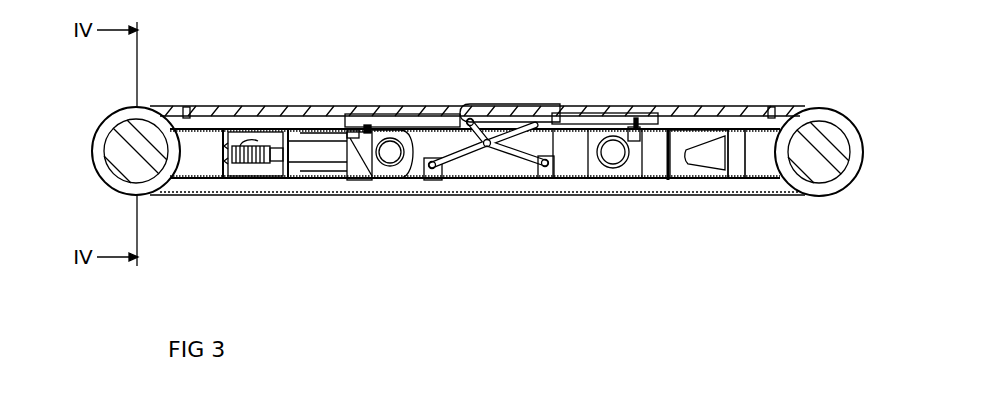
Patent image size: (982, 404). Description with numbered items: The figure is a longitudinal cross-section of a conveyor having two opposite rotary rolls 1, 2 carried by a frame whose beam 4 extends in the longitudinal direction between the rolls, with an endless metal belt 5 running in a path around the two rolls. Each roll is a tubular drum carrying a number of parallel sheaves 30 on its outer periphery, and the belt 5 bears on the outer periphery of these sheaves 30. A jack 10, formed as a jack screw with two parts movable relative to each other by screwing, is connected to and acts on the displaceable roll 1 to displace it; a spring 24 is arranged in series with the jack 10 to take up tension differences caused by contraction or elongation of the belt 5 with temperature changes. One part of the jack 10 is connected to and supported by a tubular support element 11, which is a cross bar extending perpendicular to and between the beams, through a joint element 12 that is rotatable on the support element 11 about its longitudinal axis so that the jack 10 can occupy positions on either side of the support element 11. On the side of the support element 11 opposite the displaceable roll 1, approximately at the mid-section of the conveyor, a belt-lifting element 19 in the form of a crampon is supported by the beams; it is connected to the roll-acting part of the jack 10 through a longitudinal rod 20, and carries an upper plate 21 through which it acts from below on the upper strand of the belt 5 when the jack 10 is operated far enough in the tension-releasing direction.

The rotary roll 1 is at (137, 138).
The rotary roll 2 is at (822, 148).
The beam 4 is at (215, 138).
The endless metal belt 5 is at (662, 196).
The jack 10 is at (337, 130).
The support element 11 is at (390, 158).
The joint element 12 is at (378, 128).
The belt-lifting element 19 is at (502, 158).
The rod 20 is at (415, 168).
The upper plate 21 is at (470, 106).
The spring 24 is at (257, 160).
The sheaves 30 is at (150, 185).